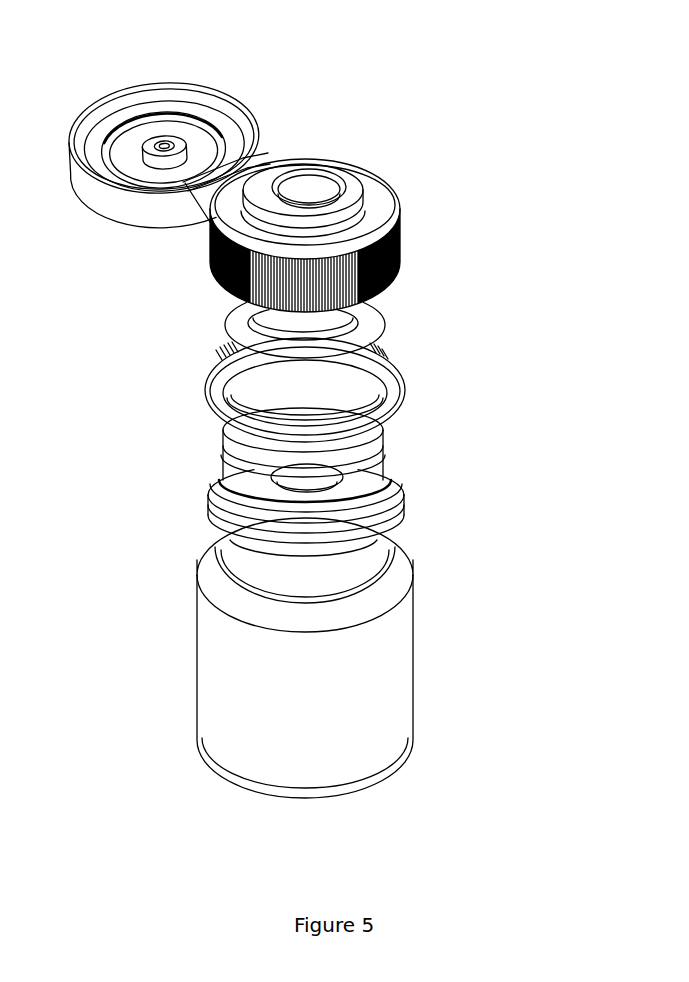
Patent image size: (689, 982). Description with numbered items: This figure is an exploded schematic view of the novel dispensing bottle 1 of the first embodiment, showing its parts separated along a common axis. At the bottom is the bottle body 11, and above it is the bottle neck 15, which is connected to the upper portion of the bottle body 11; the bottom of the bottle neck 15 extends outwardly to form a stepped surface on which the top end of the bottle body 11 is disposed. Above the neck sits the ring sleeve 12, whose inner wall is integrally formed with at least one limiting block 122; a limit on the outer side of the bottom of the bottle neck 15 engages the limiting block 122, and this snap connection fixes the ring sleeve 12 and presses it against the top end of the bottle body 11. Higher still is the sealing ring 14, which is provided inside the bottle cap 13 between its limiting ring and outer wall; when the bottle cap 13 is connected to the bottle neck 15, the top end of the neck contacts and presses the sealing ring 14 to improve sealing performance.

The dispensing bottle 1 is at (285, 41).
The bottle body 11 is at (340, 708).
The ring sleeve 12 is at (294, 390).
The limiting block 122 is at (312, 362).
The bottle cap 13 is at (395, 214).
The sealing ring 14 is at (385, 306).
The bottle neck 15 is at (400, 480).